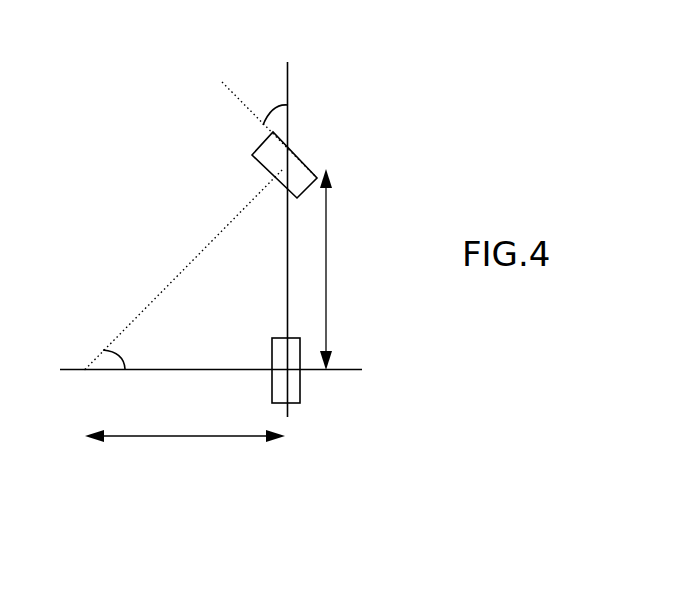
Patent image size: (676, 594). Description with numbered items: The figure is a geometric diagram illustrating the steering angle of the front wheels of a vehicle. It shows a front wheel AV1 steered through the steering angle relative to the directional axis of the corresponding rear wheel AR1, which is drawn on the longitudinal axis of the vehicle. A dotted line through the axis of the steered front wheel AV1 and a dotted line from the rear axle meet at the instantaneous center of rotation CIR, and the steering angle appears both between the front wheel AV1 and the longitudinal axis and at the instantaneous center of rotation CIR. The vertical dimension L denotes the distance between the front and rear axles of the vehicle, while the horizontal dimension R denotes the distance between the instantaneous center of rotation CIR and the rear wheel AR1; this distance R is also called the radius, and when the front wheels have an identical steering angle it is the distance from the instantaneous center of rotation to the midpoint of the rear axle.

The front wheel AV1 is at (304, 163).
The rear wheel AR1 is at (295, 388).
The instantaneous center of rotation CIR is at (85, 370).
The distance between the front and rear axles L is at (337, 269).
The radius R is at (185, 450).